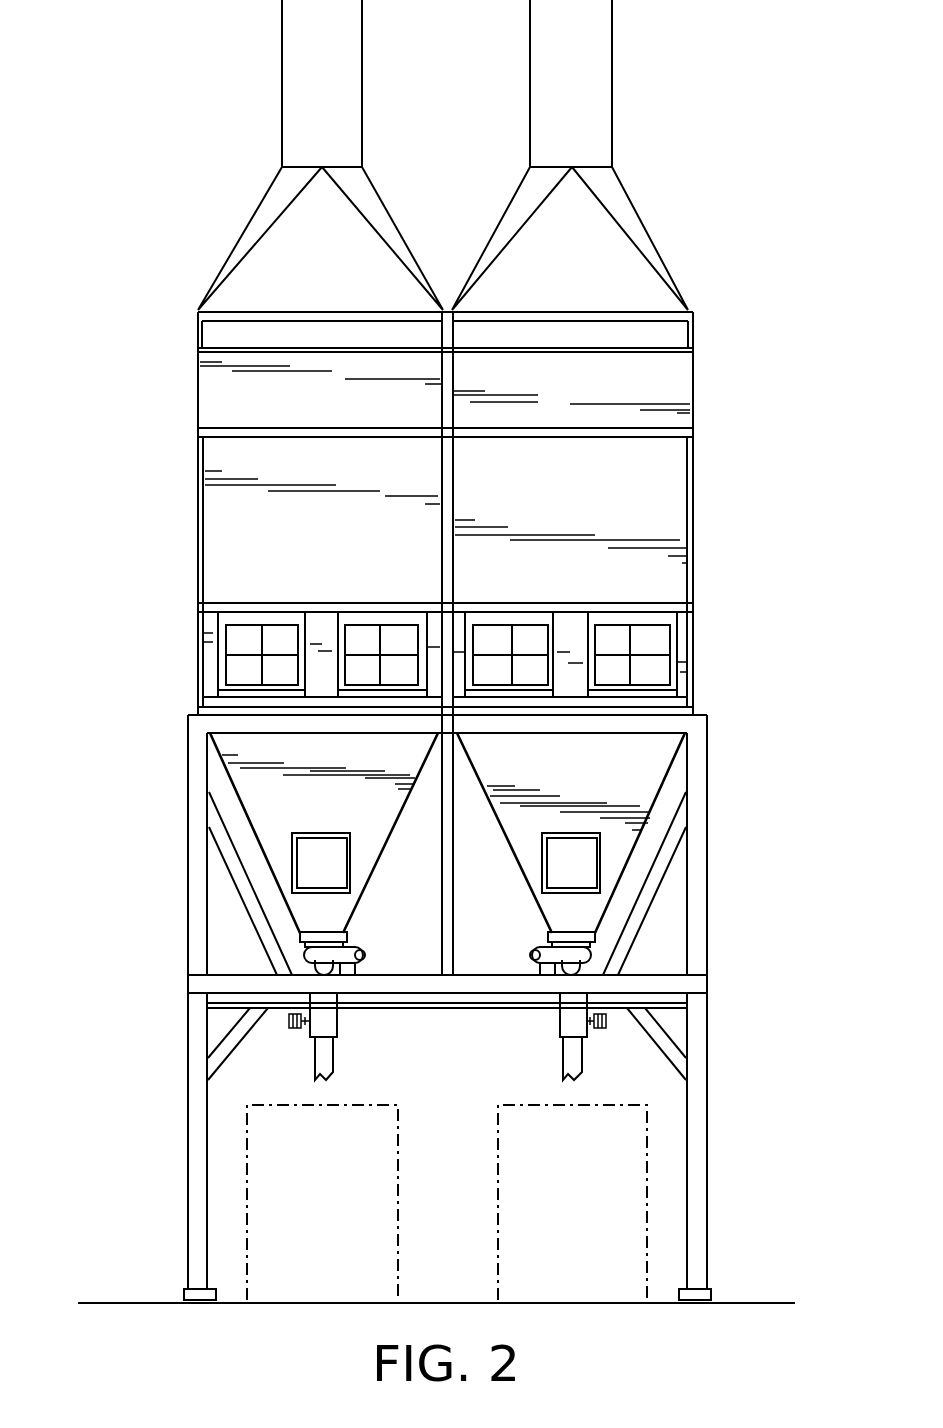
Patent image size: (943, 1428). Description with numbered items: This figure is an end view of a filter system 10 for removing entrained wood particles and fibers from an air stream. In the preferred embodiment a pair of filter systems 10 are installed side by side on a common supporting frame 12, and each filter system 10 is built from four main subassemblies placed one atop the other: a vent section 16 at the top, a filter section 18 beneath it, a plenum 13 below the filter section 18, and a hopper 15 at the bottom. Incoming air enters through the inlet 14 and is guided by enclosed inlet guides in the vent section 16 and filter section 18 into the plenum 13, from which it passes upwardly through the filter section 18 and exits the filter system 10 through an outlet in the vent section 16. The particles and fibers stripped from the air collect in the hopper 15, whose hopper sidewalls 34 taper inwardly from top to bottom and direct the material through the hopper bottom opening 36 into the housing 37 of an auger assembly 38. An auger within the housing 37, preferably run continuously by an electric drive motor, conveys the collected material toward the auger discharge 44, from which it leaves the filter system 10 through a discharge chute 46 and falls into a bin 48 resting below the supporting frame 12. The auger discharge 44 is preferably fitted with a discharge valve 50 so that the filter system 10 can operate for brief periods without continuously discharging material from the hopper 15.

The filter system 10 is at (176, 383).
The supporting frame 12 is at (708, 1050).
The plenum 13 is at (677, 653).
The inlet 14 is at (507, 210).
The hopper 15 is at (638, 775).
The vent section 16 is at (697, 386).
The filter section 18 is at (682, 528).
The hopper sidewalls 34 is at (404, 805).
The hopper bottom opening 36 is at (327, 932).
The auger housing 37 is at (300, 947).
The auger assembly 38 is at (310, 958).
The auger discharge 44 is at (347, 934).
The discharge chute 46 is at (337, 1060).
The bin 48 is at (530, 1106).
The discharge valve 50 is at (310, 1038).